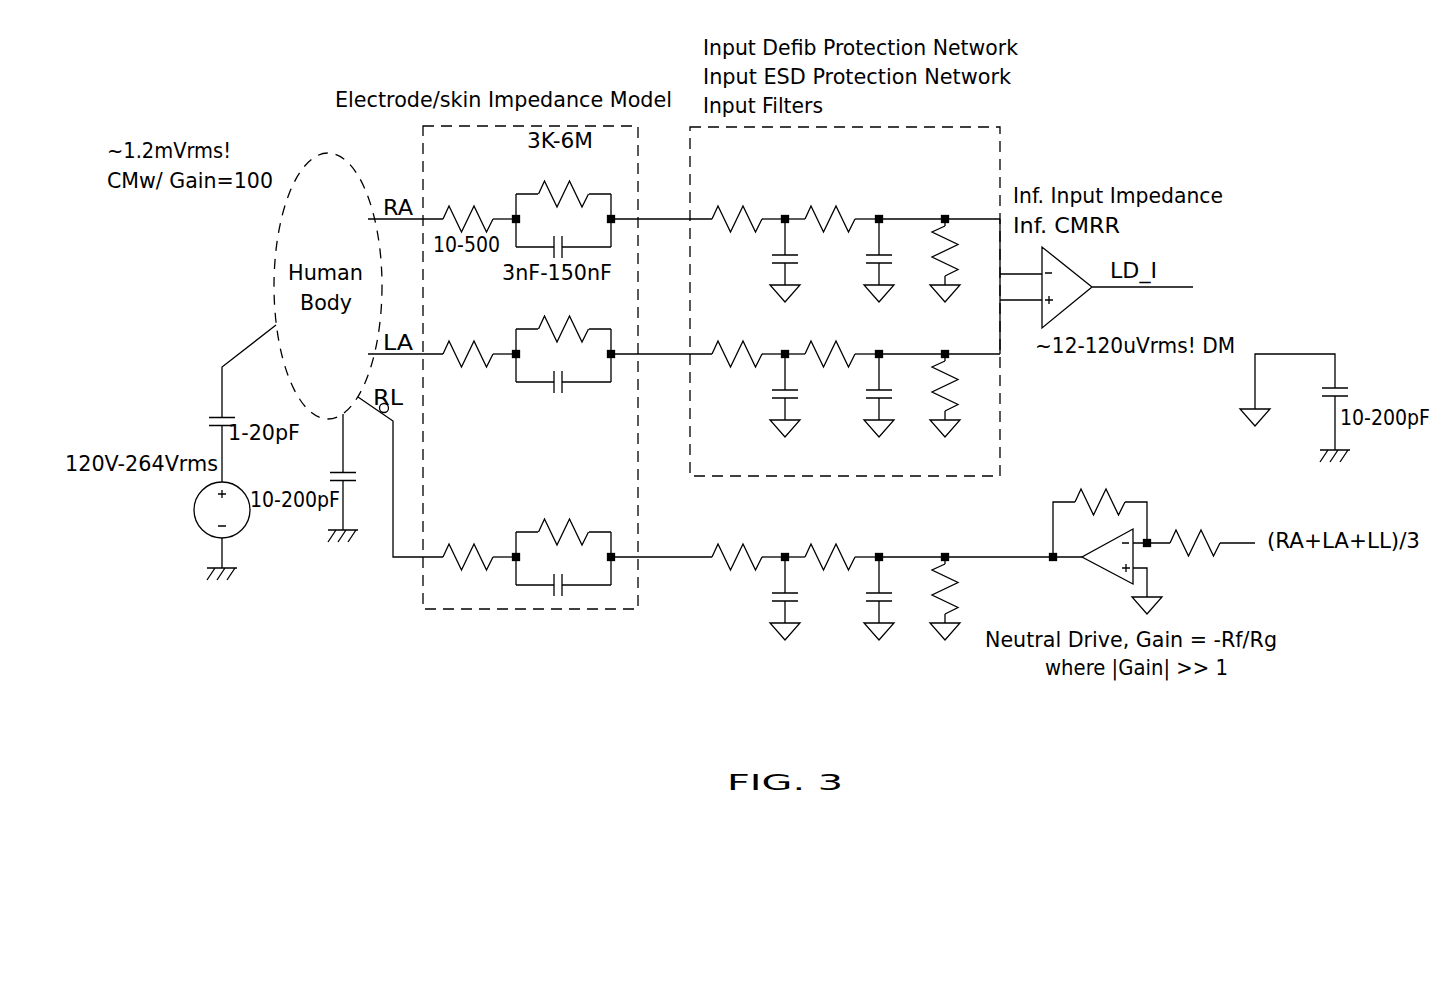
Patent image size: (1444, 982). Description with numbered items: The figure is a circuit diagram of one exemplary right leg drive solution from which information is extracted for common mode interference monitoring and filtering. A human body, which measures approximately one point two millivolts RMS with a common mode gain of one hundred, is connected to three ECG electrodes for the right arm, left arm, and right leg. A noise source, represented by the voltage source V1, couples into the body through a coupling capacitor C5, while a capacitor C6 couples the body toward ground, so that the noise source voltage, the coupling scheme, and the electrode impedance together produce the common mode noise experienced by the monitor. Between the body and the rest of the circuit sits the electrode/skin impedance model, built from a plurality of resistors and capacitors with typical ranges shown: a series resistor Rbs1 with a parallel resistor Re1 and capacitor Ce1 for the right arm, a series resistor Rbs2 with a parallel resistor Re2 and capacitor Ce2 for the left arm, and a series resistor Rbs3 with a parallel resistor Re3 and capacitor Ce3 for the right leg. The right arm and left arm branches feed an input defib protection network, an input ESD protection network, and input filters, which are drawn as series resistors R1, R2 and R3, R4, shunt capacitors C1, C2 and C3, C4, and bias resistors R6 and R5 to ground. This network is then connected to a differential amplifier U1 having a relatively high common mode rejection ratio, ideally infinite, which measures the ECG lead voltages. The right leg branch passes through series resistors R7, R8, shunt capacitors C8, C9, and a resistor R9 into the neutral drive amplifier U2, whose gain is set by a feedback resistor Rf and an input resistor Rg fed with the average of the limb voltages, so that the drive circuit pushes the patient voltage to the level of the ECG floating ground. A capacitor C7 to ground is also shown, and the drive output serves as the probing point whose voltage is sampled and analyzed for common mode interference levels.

The coupling capacitor from mains to body C5 is at (233, 433).
The mains voltage source 120V-264Vrms V1 is at (232, 518).
The body to ground capacitor C6 is at (354, 489).
The electrode/skin bulk series resistance RA Rbs1 is at (479, 207).
The electrode/skin resistance RA Re1 is at (563, 182).
The electrode/skin capacitance RA Ce1 is at (563, 233).
The electrode/skin bulk series resistance LA Rbs2 is at (479, 342).
The electrode/skin resistance LA Re2 is at (563, 317).
The electrode/skin capacitance LA Ce2 is at (563, 368).
The electrode/skin bulk series resistance RL Rbs3 is at (479, 544).
The electrode/skin resistance RL Re3 is at (563, 519).
The electrode/skin capacitance RL Ce3 is at (563, 571).
The input protection resistor R1 is at (748, 207).
The input filter resistor R2 is at (832, 207).
The input filter capacitor C1 is at (796, 260).
The input filter capacitor C2 is at (890, 260).
The input bias resistor R6 is at (961, 260).
The input protection resistor R3 is at (748, 342).
The input filter resistor R4 is at (832, 342).
The input filter capacitor C3 is at (796, 395).
The input filter capacitor C4 is at (890, 395).
The input bias resistor R5 is at (961, 395).
The input protection resistor R7 is at (748, 545).
The input filter resistor R8 is at (832, 545).
The input filter capacitor C8 is at (796, 598).
The input filter capacitor C9 is at (890, 598).
The input bias resistor R9 is at (961, 598).
The instrumentation amplifier U1 is at (1117, 286).
The neutral drive amplifier U2 is at (1119, 567).
The feedback resistor Rf is at (1100, 507).
The gain resistor Rg is at (1201, 529).
The capacitor 10-200pF C7 is at (1306, 408).